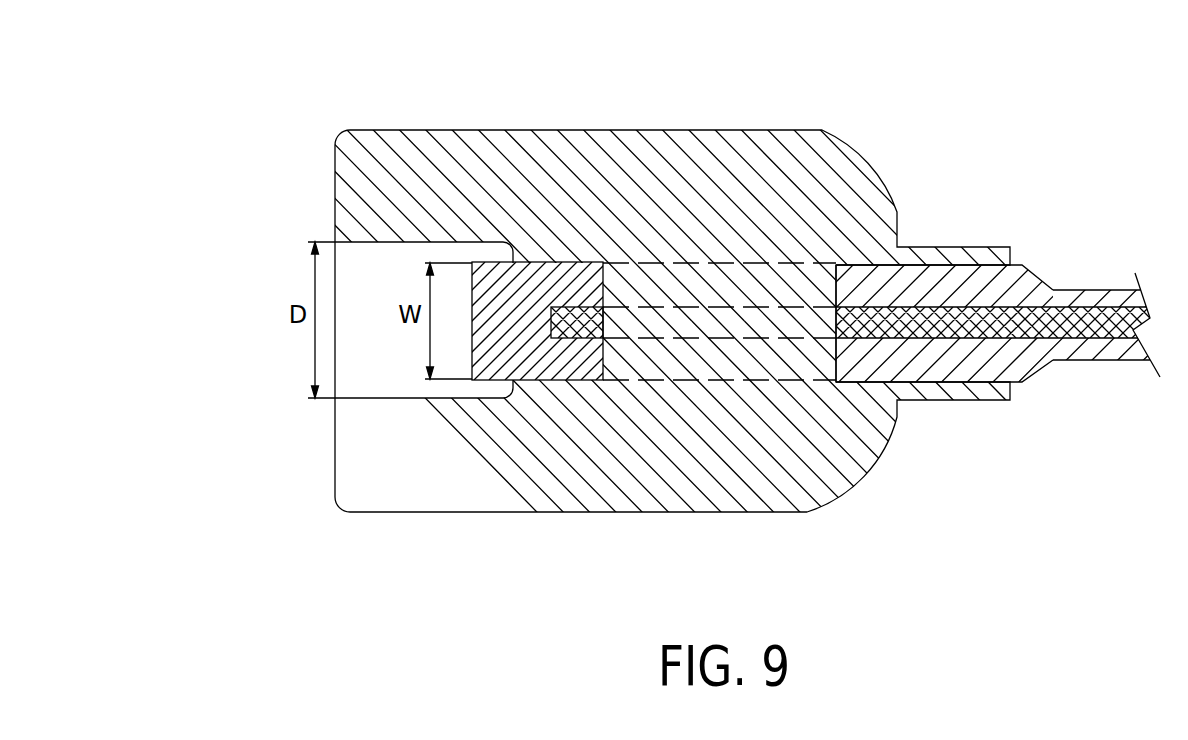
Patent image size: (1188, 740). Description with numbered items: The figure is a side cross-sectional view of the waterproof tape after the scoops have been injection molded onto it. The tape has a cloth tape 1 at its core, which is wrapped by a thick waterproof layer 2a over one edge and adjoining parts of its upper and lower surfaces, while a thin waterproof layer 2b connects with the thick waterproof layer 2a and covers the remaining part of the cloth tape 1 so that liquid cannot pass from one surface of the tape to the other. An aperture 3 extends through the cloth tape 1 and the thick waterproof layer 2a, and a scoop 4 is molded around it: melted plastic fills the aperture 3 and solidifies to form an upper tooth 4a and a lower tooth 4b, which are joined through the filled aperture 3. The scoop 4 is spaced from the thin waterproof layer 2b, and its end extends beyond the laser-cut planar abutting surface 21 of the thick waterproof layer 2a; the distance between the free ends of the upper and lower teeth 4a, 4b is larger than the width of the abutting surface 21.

The cloth tape 1 is at (955, 323).
The thick waterproof layer 2a is at (955, 282).
The thin waterproof layer 2b is at (1098, 297).
The aperture 3 is at (786, 262).
The scoop 4 is at (670, 320).
The upper tooth 4a is at (360, 183).
The lower tooth 4b is at (350, 435).
The abutting surface 21 is at (472, 347).